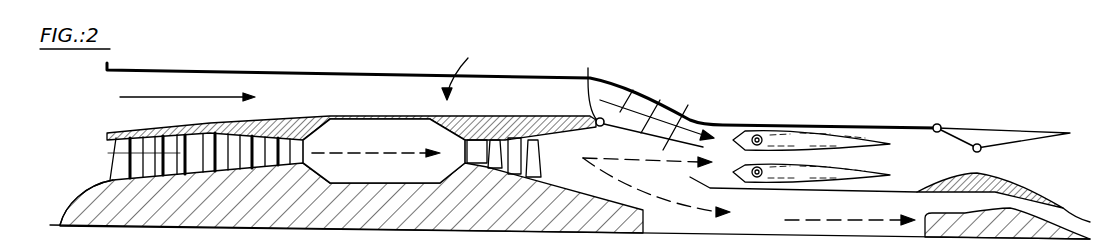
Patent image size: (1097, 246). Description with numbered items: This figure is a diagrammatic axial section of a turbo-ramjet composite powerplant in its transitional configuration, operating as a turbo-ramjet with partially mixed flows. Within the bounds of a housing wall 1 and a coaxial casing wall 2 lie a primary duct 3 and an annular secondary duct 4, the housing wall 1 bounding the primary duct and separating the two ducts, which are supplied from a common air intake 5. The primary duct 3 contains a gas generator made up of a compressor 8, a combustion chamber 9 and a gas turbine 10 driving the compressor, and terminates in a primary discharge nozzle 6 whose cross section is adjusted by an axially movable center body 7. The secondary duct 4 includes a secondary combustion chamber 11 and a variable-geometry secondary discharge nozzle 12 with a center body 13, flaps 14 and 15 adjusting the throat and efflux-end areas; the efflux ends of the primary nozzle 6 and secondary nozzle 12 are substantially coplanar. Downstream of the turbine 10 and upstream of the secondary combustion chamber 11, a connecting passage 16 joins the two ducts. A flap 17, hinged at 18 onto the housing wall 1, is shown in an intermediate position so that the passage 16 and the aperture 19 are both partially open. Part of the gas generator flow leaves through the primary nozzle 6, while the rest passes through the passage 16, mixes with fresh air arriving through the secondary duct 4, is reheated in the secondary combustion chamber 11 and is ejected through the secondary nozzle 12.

The housing wall 1 is at (408, 114).
The casing wall 2 is at (488, 76).
The primary duct 3 is at (561, 143).
The secondary duct 4 is at (457, 70).
The air intake 5 is at (78, 125).
The primary discharge nozzle 6 is at (990, 202).
The center body 7 is at (1067, 218).
The compressor 8 is at (218, 126).
The combustion chamber 9 is at (367, 137).
The gas turbine 10 is at (505, 137).
The secondary combustion chamber 11 is at (806, 153).
The secondary discharge nozzle 12 is at (1012, 160).
The center body 13 is at (963, 174).
The flap 14 is at (944, 140).
The flap 15 is at (992, 158).
The connecting passage 16 is at (688, 119).
The flap 17 is at (660, 100).
The hinge 18 is at (601, 87).
The aperture 19 is at (633, 90).